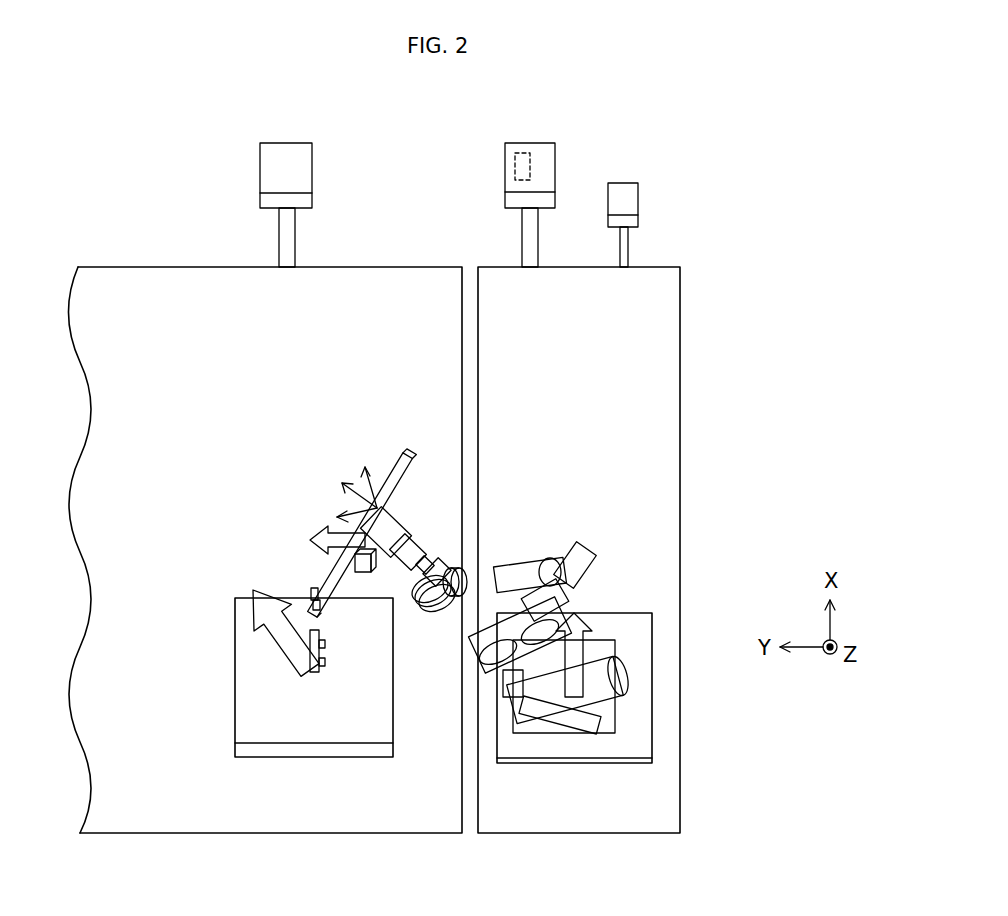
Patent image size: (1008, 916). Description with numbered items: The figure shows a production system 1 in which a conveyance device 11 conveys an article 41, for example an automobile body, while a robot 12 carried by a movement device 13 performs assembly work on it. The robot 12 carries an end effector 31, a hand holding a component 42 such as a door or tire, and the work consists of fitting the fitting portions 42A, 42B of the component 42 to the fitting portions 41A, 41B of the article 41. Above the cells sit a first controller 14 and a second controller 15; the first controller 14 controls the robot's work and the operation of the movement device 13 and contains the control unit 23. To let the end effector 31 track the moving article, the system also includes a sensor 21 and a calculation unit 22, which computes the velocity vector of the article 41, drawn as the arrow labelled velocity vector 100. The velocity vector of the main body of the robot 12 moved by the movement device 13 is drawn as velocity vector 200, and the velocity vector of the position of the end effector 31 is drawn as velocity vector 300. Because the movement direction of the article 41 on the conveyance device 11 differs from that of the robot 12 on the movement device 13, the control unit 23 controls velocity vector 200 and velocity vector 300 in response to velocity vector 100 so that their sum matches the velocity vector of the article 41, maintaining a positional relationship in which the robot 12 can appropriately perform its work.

The production system 1 is at (798, 197).
The conveyance device 11 is at (235, 687).
The robot 12 is at (503, 560).
The movement device 13 is at (672, 348).
The first controller 14 is at (533, 191).
The second controller 15 is at (313, 162).
The sensor 21 is at (497, 682).
The calculation unit 22 is at (638, 195).
The control unit 23 is at (506, 150).
The end effector 31 is at (400, 508).
The article 41 is at (381, 663).
The fitting portion 41A is at (320, 636).
The fitting portion 41B is at (322, 662).
The component 42 is at (311, 499).
The fitting portion 42A is at (314, 588).
The fitting portion 42B is at (313, 602).
The velocity vector of the article 100 is at (235, 628).
The velocity vector of the robot 200 is at (597, 612).
The velocity vector of the position of the end effector 300 is at (328, 527).